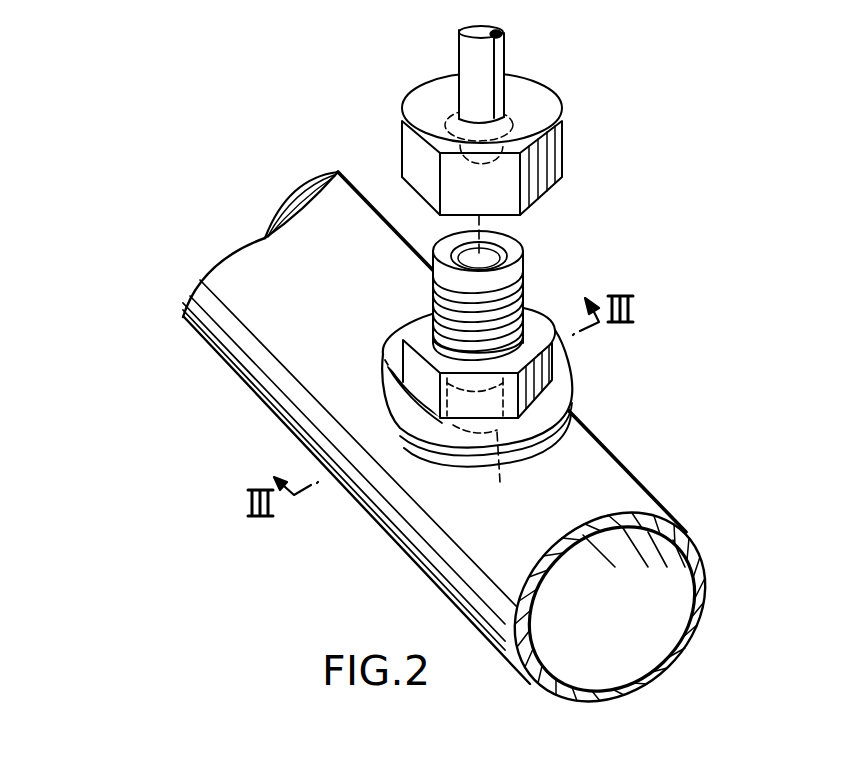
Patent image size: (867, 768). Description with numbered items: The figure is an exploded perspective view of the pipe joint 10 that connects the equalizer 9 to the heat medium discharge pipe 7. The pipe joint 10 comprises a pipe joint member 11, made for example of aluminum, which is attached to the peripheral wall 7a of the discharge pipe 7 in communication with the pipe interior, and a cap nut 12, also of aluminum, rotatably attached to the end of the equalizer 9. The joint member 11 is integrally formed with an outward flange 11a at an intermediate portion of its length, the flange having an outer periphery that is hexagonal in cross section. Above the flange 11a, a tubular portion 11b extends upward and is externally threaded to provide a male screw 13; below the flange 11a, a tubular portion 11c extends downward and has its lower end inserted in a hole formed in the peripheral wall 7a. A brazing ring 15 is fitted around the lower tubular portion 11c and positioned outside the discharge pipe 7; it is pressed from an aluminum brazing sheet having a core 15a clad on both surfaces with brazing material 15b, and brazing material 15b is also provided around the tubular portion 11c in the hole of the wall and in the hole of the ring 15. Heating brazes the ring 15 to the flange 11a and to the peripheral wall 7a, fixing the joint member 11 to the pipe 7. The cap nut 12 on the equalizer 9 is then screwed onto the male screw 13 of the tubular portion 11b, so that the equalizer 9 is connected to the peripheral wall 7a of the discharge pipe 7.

The heat medium discharge pipe 7 is at (463, 456).
The peripheral wall 7a is at (687, 532).
The equalizer 9 is at (505, 48).
The pipe joint 10 is at (556, 219).
The pipe joint member 11 is at (476, 378).
The outward flange 11a is at (557, 357).
The tubular portion 11b is at (512, 249).
The tubular portion 11c is at (495, 477).
The cap nut 12 is at (558, 138).
The male screw 13 is at (432, 285).
The brazing ring 15 is at (476, 409).
The core 15a is at (385, 386).
The brazing material 15b is at (534, 453).